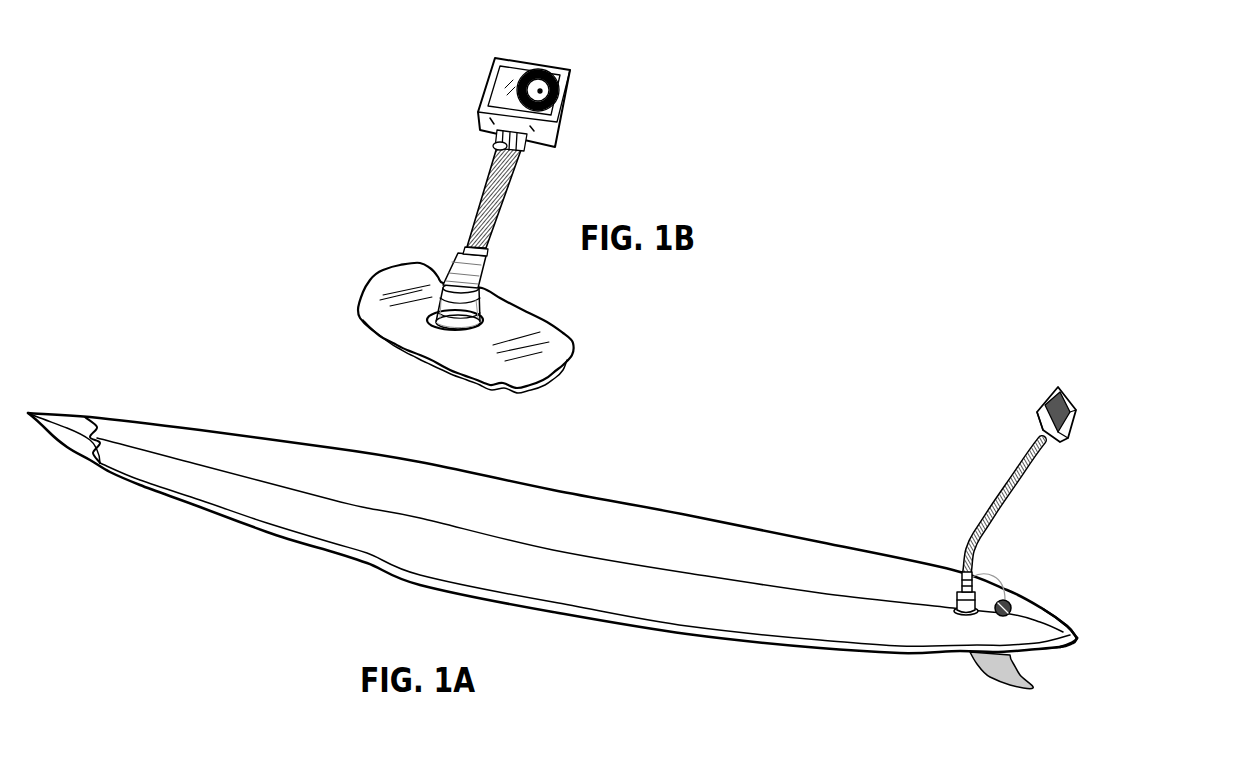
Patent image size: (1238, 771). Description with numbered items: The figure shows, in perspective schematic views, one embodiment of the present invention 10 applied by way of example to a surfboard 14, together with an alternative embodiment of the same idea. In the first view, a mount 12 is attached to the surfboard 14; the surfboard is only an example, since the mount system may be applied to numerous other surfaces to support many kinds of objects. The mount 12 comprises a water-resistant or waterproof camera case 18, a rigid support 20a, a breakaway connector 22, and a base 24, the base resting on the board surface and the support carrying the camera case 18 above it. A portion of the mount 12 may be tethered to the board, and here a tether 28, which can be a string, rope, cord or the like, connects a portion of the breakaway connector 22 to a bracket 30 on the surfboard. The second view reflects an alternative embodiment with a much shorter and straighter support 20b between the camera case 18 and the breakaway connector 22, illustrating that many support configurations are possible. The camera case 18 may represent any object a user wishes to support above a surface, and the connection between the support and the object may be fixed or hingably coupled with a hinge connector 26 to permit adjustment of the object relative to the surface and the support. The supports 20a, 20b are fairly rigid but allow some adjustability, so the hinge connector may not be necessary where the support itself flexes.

In FIG. 1A, the present invention 10 is at (1097, 385).
In FIG. 1A, the mount 12 is at (985, 508).
In FIG. 1A, the surfboard 14 is at (697, 512).
In FIG. 1B, the camera case 18 is at (490, 83).
In FIG. 1A, the camera case 18 is at (1040, 403).
In FIG. 1A, the rigid support 20a is at (1013, 490).
In FIG. 1B, the support 20b is at (483, 190).
In FIG. 1B, the breakaway connector 22 is at (460, 277).
In FIG. 1A, the breakaway connector 22 is at (960, 583).
In FIG. 1A, the base 24 is at (953, 608).
In FIG. 1B, the hinge connector 26 is at (493, 142).
In FIG. 1A, the tether 28 is at (1003, 587).
In FIG. 1A, the bracket 30 is at (1077, 642).